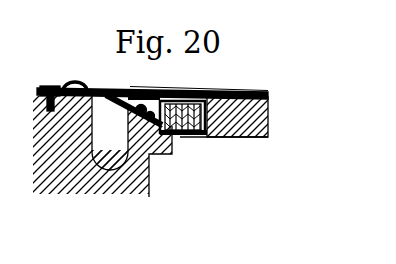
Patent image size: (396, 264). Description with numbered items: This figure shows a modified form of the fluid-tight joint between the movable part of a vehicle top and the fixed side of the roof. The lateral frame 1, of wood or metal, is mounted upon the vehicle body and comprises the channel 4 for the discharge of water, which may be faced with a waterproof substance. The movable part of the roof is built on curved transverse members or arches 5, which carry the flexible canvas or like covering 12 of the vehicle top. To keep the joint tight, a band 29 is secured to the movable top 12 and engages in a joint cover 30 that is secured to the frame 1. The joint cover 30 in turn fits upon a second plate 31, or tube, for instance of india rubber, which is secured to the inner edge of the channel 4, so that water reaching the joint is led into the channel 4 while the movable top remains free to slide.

The lateral frame 1 is at (43, 118).
The channel 4 is at (115, 148).
The arch 5 is at (253, 128).
The covering 12 is at (125, 89).
The band 29 is at (85, 112).
The joint cover 30 is at (79, 86).
The second plate 31 is at (85, 148).